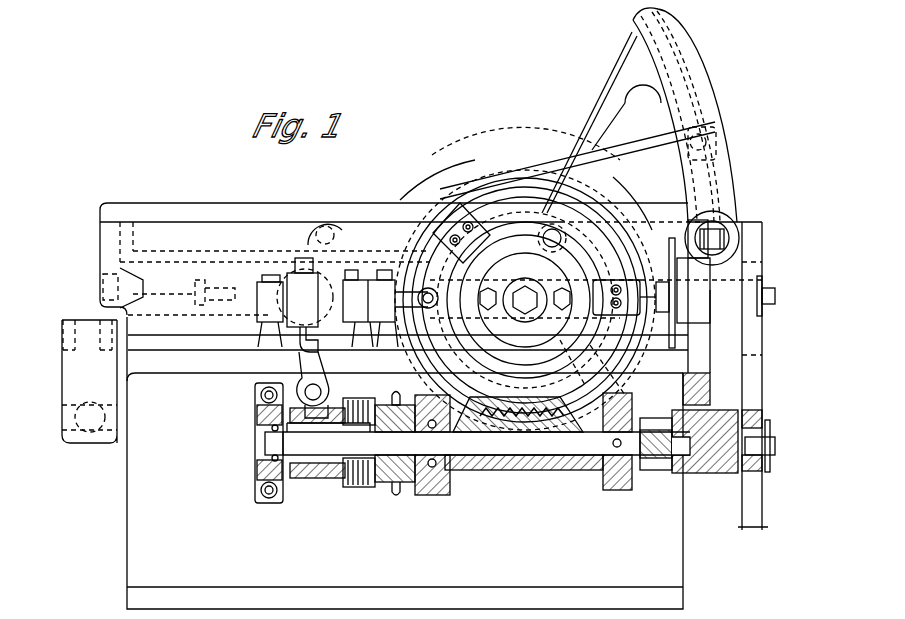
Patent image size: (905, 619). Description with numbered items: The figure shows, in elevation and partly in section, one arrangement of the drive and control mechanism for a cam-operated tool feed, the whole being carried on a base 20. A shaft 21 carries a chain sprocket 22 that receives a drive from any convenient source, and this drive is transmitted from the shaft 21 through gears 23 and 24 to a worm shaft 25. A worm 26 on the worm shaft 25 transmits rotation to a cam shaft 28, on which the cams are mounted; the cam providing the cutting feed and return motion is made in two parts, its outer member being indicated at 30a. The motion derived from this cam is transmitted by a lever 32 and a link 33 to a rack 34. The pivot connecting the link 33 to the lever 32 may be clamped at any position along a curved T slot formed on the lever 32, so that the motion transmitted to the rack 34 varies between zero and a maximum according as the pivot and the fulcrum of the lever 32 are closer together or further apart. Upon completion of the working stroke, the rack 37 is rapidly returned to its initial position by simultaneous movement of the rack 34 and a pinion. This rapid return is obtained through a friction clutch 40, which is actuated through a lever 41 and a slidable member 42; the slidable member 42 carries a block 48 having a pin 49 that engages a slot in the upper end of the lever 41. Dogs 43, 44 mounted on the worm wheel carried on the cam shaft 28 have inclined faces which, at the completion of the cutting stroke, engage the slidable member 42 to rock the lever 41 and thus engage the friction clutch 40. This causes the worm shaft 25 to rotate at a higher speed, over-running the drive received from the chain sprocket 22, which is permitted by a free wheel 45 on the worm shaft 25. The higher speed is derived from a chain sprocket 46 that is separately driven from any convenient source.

The base 20 is at (127, 585).
The shaft 21 is at (725, 293).
The chain sprocket 22 is at (690, 340).
The gear 23 is at (762, 248).
The gear 24 is at (752, 392).
The worm shaft 25 is at (547, 445).
The worm 26 is at (510, 430).
The cam shaft 28 is at (525, 290).
The outer member of cam 30a is at (483, 157).
The lever 32 is at (718, 170).
The link 33 is at (533, 172).
The rack 34 is at (188, 237).
The rack 37 is at (93, 358).
The friction clutch 40 is at (378, 482).
The lever 41 is at (288, 363).
The slidable member 42 is at (358, 275).
The dog 43 is at (483, 235).
The dog 44 is at (645, 297).
The free wheel 45 is at (663, 470).
The chain sprocket 46 is at (396, 484).
The block 48 is at (297, 275).
The pin 49 is at (300, 347).